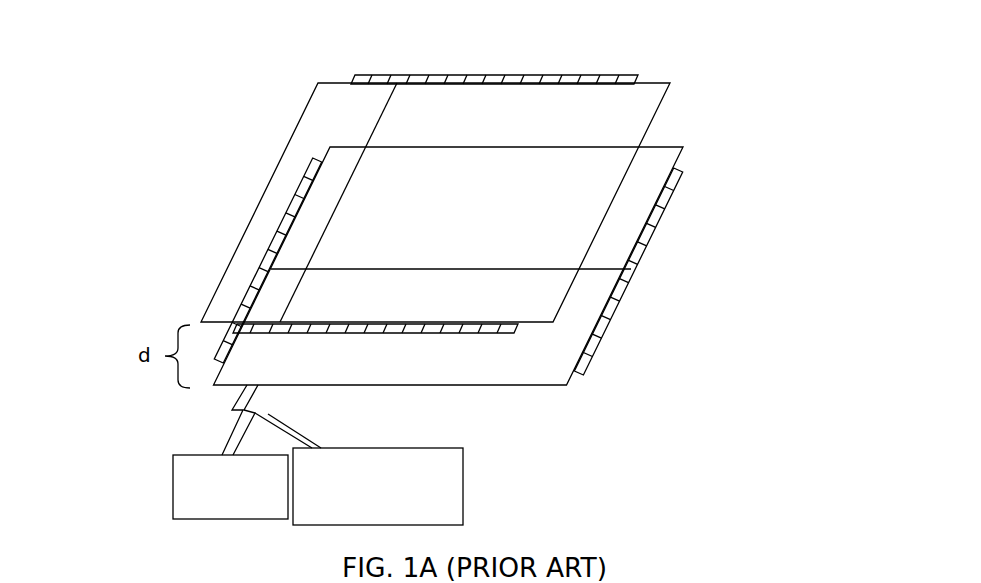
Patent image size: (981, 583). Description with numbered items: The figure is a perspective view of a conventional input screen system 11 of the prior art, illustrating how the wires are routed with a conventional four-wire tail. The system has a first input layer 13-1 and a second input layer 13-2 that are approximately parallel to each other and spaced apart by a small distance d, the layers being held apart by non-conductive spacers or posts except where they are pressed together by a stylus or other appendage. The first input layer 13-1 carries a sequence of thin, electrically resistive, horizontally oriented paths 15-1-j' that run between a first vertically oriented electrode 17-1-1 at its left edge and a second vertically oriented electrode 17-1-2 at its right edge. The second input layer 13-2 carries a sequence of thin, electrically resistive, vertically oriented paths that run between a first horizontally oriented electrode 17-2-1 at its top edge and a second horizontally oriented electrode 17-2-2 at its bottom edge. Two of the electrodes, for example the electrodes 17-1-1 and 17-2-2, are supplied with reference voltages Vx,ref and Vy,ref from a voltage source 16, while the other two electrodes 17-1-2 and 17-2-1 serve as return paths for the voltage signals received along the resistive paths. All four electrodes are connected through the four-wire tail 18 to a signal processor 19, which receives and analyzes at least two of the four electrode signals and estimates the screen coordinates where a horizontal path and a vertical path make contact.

The input screen system 11 is at (427, 215).
The first input layer 13-1 is at (480, 248).
The second input layer 13-2 is at (490, 222).
The horizontally oriented electrically resistive path 15-1-j' is at (451, 250).
The voltage source 16 is at (424, 486).
The first vertically oriented electrode 17-1-1 is at (242, 260).
The second vertically oriented electrode 17-1-2 is at (678, 271).
The first horizontally oriented electrode 17-2-1 is at (494, 50).
The second horizontally oriented electrode 17-2-2 is at (375, 376).
The four-wire tail 18 is at (301, 420).
The signal processor 19 is at (187, 487).